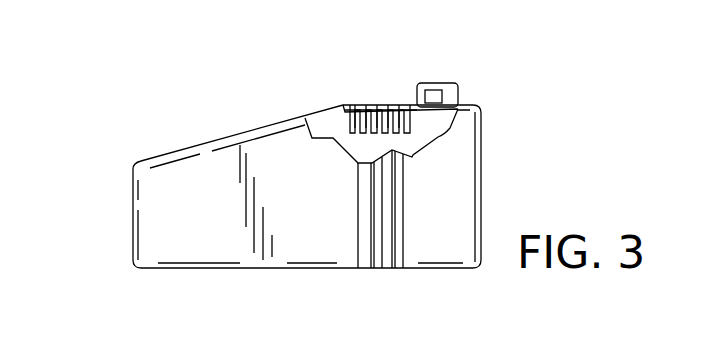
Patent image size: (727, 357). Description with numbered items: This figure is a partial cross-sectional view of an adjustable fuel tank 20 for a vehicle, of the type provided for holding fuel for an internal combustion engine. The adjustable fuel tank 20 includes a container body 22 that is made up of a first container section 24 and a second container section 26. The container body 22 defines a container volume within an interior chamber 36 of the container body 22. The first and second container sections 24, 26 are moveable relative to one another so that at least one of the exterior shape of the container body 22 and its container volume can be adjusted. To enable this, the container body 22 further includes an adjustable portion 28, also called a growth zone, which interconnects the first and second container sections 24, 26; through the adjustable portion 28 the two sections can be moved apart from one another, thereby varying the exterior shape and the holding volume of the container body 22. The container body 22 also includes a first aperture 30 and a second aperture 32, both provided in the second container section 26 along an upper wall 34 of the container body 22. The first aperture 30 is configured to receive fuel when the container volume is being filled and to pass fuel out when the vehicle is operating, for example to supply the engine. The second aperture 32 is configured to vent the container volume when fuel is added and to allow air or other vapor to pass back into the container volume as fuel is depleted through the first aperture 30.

The adjustable fuel tank 20 is at (140, 121).
The container body 22 is at (198, 238).
The first container section 24 is at (272, 157).
The second container section 26 is at (458, 175).
The adjustable portion 28 is at (375, 258).
The first aperture 30 is at (450, 87).
The second aperture 32 is at (431, 89).
The upper wall 34 is at (455, 105).
The interior chamber 36 is at (340, 128).